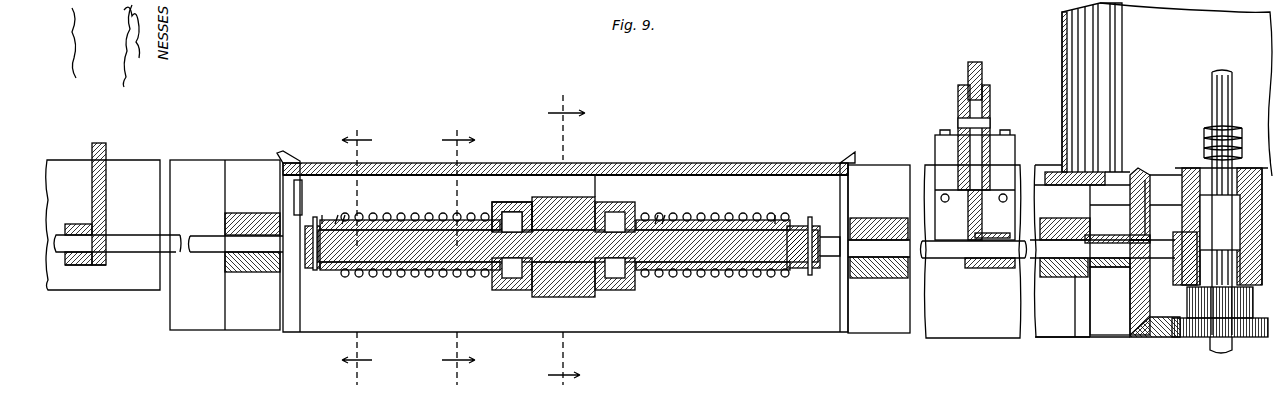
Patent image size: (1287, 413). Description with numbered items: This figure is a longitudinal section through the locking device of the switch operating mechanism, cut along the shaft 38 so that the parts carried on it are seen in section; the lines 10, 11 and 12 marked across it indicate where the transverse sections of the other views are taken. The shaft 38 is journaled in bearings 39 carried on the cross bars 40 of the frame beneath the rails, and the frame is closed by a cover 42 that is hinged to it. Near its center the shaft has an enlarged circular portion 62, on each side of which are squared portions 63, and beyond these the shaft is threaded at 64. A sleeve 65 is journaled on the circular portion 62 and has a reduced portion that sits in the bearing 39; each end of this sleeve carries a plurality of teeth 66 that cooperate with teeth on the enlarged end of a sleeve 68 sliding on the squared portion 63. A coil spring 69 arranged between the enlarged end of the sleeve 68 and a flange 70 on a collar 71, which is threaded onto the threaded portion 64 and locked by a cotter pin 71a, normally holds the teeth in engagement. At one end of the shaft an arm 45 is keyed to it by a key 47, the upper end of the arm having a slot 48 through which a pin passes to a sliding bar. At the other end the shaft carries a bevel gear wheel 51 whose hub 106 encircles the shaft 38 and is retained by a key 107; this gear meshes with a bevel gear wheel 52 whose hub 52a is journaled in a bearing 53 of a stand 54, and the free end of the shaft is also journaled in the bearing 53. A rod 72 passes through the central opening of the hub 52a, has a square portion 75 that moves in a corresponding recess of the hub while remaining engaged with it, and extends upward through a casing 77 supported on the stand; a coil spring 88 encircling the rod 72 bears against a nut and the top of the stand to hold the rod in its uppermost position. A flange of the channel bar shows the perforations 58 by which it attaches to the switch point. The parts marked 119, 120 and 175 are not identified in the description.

The section line 10— 10 is at (566, 239).
The section line 11— 11 is at (458, 247).
The section line 12— 12 is at (357, 251).
The shaft 38 is at (176, 236).
The bearings 39 is at (1060, 212).
The cross bars 40 is at (254, 273).
The cover 42 is at (793, 167).
The arm 45 is at (968, 218).
The key 47 is at (998, 268).
The slot 48 is at (975, 100).
The bevel gear wheel 51 is at (1130, 312).
The bevel gear wheel 52 is at (1150, 338).
The hub 52a is at (1185, 292).
The bearing 53 is at (1220, 320).
The stand 54 is at (1117, 270).
The perforations 58 is at (965, 122).
The enlarged circular portion 62 is at (498, 280).
The squared portions 63 is at (445, 262).
The threaded portions 64 is at (370, 270).
The sleeve 65 is at (600, 205).
The teeth 66 is at (488, 210).
The sleeve 68 is at (646, 272).
The coil spring 69 is at (405, 214).
The flange 70 is at (330, 272).
The collar 71 is at (556, 246).
The cotter pin 71a is at (564, 205).
The rod 72 is at (1215, 108).
The square portion 75 is at (1221, 226).
The casing 77 is at (1066, 117).
The coil spring 88 is at (1205, 156).
The hub 106 is at (1115, 195).
The key 107 is at (1080, 337).
The housing 119 is at (940, 155).
The frame block 120 is at (148, 193).
The flange 175 is at (1166, 200).